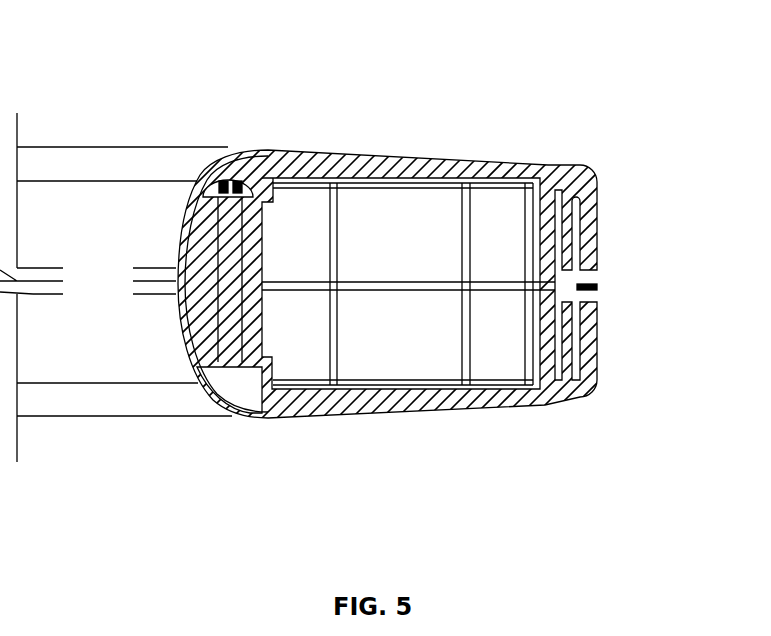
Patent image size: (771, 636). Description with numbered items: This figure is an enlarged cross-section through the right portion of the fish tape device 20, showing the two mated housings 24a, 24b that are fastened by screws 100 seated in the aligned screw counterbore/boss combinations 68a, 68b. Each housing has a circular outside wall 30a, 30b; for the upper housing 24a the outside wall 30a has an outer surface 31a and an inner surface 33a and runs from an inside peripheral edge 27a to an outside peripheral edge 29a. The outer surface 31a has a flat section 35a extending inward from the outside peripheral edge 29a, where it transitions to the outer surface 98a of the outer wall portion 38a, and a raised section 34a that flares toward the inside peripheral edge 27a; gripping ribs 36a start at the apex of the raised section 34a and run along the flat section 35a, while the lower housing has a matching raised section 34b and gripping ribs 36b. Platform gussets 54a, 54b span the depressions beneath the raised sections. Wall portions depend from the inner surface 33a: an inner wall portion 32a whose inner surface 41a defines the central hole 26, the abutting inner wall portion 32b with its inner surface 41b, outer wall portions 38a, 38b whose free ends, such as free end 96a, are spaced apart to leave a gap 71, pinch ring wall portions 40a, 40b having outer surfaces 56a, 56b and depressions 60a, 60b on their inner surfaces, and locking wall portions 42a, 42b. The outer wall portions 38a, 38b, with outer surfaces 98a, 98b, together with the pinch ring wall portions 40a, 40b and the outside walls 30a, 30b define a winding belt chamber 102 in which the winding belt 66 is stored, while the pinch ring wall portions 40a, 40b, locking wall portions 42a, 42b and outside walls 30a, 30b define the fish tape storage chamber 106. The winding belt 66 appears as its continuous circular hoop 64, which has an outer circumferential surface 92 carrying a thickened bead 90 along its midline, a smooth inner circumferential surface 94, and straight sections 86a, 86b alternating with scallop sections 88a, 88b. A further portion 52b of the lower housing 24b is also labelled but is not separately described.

The device 20 is at (281, 114).
The housing 24a is at (100, 232).
The housing 24b is at (97, 352).
The central hole 26 is at (113, 294).
The inside peripheral edge 27a is at (233, 150).
The outside peripheral edge 29a is at (590, 165).
The circular outside wall 30a is at (489, 166).
The outside wall 30b is at (472, 400).
The outer surface 31a is at (397, 156).
The inner wall portion 32a is at (200, 243).
The inner wall portion 32b is at (200, 327).
The inner surface 33a is at (433, 185).
The raised section 34a is at (250, 150).
The raised section 34b is at (253, 412).
The flat section 35a is at (451, 178).
The gripping ribs 36a is at (355, 165).
The gripping ribs 36b is at (322, 412).
The outer wall portion 38a is at (590, 201).
The outer wall portion 38b is at (592, 347).
The pinch ring wall portion 40a is at (548, 185).
The pinch ring wall portion 40b is at (547, 385).
The inner surface 41a is at (182, 229).
The inner surface 41b is at (175, 305).
The locking wall portion 42a is at (264, 245).
The locking ring wall portion 42b is at (264, 325).
The lower shell end 52b is at (412, 392).
The platform gussets 54a is at (316, 180).
The platform gussets 54b is at (420, 385).
The outer surface 56a is at (567, 195).
The outer surface 56b is at (568, 321).
The depressions 60a is at (340, 238).
The depressions 60b is at (340, 333).
The continuous circular hoop 64 is at (590, 239).
The winding belt 66 is at (553, 257).
The screw counterbore/boss combinations 68a is at (227, 172).
The screw counterbore/boss combinations 68b is at (227, 402).
The gap 71 is at (593, 278).
The straight section 86a is at (557, 178).
The straight section 86b is at (559, 383).
The scallop section 88a is at (578, 186).
The scallop section 88b is at (578, 385).
The thickened bead 90 is at (582, 292).
The outer circumferential surface 92 is at (597, 358).
The inner circumferential surface 94 is at (584, 338).
The free end 96a is at (592, 269).
The outer surface 98a is at (590, 229).
The outer surface 98b is at (593, 353).
The screws 100 is at (200, 215).
The winding belt chamber 102 is at (572, 392).
The fish tape storage chamber 106 is at (446, 380).